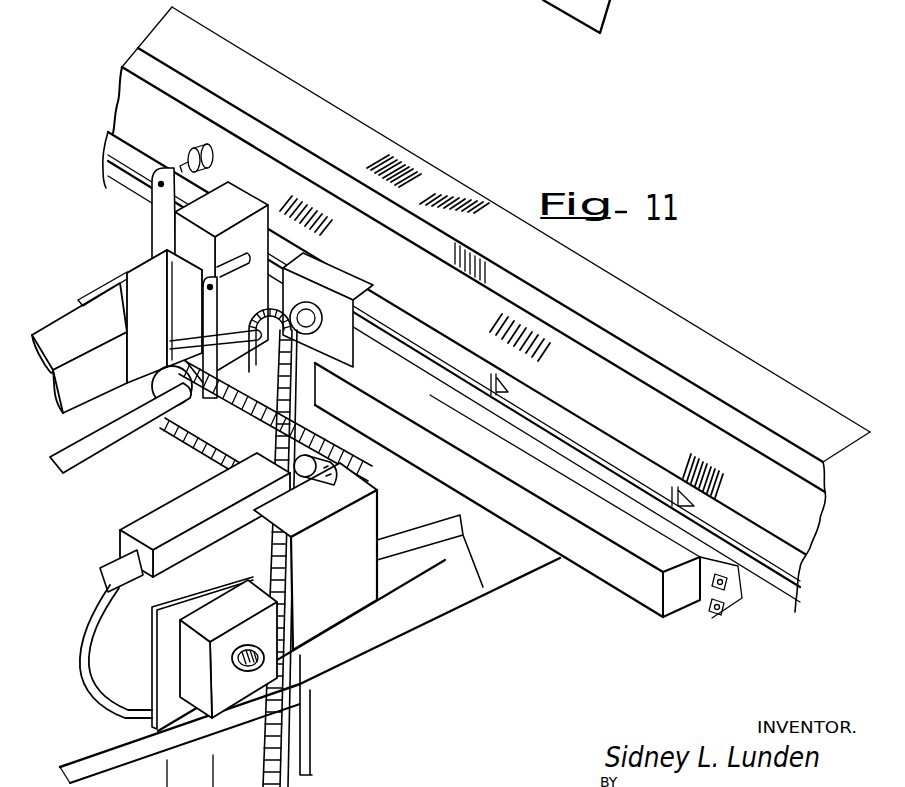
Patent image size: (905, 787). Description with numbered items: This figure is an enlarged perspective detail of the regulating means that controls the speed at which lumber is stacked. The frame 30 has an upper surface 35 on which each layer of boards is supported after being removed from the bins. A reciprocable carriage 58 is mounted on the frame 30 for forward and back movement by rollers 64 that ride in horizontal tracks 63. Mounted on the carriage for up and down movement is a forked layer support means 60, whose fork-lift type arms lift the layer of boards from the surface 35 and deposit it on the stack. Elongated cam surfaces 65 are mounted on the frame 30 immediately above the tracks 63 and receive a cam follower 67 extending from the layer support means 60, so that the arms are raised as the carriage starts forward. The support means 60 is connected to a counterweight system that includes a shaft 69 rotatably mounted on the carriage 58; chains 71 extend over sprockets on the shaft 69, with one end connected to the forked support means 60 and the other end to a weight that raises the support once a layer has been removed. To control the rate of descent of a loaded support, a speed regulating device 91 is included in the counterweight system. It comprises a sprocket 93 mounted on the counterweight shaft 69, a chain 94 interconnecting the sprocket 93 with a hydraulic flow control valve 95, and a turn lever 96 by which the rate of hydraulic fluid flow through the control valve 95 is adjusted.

The frame 30 is at (788, 390).
The upper surface 35 is at (695, 332).
The reciprocable carriage 58 is at (597, 572).
The forked layer support means 60 is at (58, 304).
The horizontal tracks 63 is at (782, 592).
The rollers 64 is at (757, 567).
The cam surfaces 65 is at (628, 416).
The cam follower 67 is at (211, 157).
The shaft 69 is at (110, 442).
The chains 71 is at (254, 313).
The speed regulating device 91 is at (363, 630).
The sprocket 93 is at (203, 424).
The chain 94 is at (323, 442).
The hydraulic flow control valve 95 is at (378, 508).
The turn lever 96 is at (243, 649).